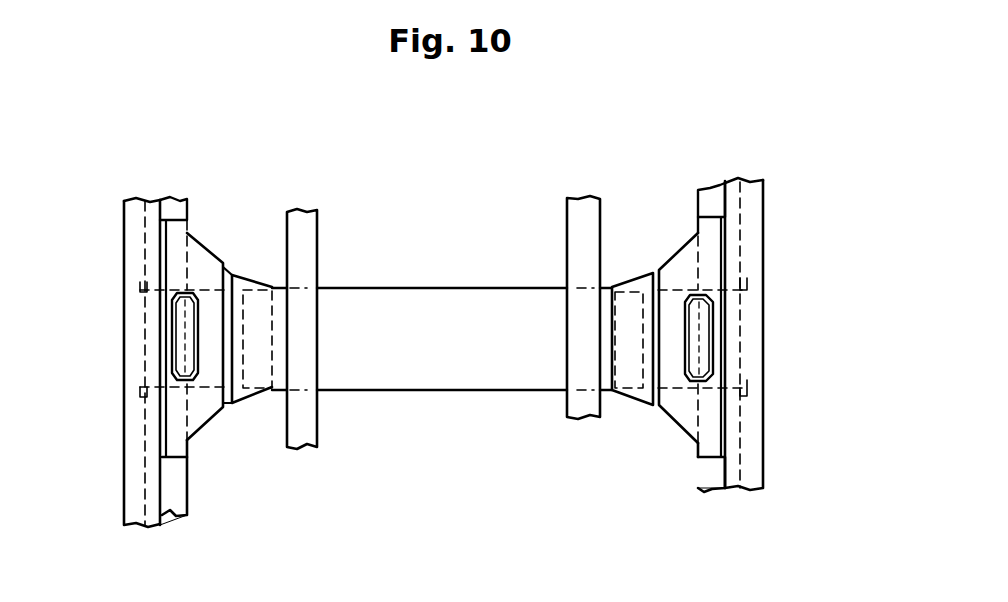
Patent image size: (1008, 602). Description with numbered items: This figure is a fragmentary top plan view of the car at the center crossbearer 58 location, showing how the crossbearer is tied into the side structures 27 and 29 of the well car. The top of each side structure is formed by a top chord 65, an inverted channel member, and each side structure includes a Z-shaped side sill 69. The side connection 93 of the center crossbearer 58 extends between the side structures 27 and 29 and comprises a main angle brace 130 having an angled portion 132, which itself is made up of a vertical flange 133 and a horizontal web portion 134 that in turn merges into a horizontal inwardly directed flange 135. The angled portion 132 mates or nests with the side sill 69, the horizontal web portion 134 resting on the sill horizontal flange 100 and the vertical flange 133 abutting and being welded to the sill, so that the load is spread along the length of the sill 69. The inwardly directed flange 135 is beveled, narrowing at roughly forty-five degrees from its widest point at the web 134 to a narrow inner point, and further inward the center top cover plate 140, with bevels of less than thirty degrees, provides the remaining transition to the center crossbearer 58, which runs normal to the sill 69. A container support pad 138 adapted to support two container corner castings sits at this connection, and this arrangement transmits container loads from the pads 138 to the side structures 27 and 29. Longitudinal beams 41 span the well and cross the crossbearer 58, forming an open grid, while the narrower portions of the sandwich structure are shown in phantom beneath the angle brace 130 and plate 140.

The side structure 27 is at (767, 211).
The side structure 29 is at (123, 253).
The longitudinal beam 41 is at (313, 450).
The center crossbearer 58 is at (440, 393).
The top chord 65 is at (132, 215).
The side sill 69 is at (188, 478).
The side connection 93 is at (222, 408).
The sill horizontal flange 100 is at (177, 513).
The main angle brace 130 is at (208, 267).
The angled portion 132 is at (178, 210).
The vertical flange 133 is at (155, 207).
The horizontal web portion 134 is at (178, 247).
The horizontal inwardly directed flange 135 is at (197, 428).
The container support pad 138 is at (170, 342).
The center top cover plate 140 is at (258, 287).